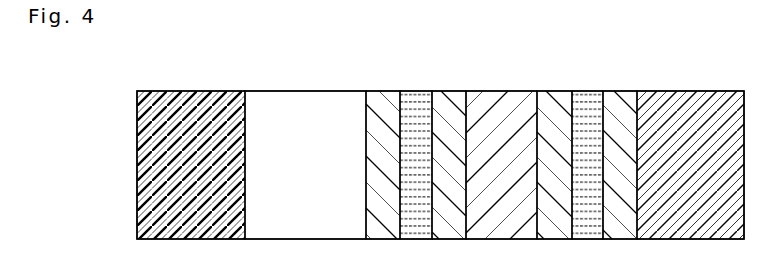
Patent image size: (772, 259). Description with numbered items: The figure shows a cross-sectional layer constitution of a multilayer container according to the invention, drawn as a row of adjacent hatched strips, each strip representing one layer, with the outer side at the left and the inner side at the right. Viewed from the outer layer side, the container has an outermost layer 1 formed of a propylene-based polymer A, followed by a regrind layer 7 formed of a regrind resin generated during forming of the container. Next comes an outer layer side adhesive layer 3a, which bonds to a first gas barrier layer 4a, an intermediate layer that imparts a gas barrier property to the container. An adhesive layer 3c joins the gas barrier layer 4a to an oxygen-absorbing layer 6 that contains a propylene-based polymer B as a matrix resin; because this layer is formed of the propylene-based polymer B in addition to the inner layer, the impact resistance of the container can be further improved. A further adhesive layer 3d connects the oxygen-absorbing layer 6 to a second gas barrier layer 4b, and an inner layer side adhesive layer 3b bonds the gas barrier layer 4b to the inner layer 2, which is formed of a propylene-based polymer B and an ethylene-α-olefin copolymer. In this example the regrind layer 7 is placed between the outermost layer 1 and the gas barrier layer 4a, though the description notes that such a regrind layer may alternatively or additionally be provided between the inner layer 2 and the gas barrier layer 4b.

The outermost layer 1 is at (190, 100).
The regrind layer 7 is at (306, 107).
The outer layer side adhesive layer 3a is at (387, 100).
The gas barrier layer 4a is at (421, 100).
The adhesive layer 3c is at (450, 100).
The oxygen-absorbing layer 6 is at (506, 100).
The adhesive layer 3d is at (556, 100).
The gas barrier layer 4b is at (590, 100).
The inner layer side adhesive layer 3b is at (620, 100).
The inner layer 2 is at (692, 100).